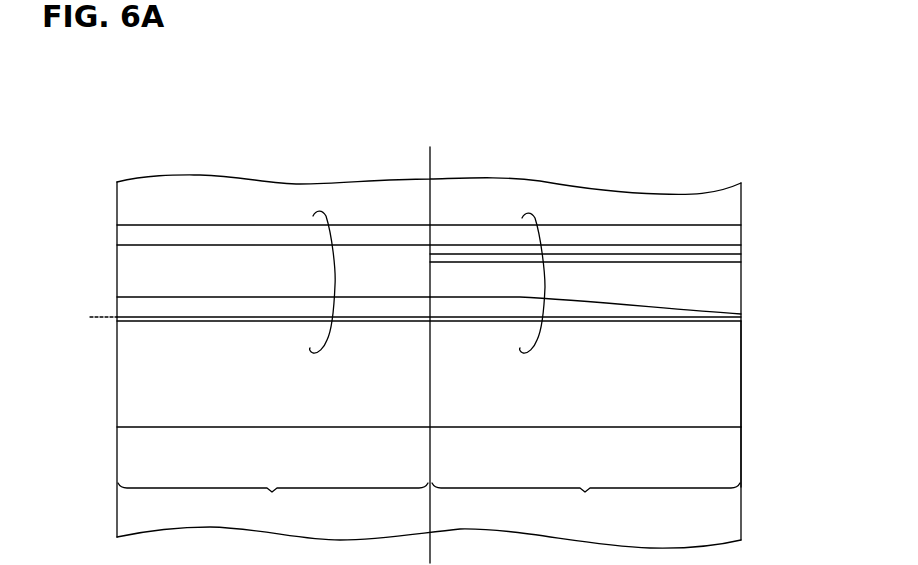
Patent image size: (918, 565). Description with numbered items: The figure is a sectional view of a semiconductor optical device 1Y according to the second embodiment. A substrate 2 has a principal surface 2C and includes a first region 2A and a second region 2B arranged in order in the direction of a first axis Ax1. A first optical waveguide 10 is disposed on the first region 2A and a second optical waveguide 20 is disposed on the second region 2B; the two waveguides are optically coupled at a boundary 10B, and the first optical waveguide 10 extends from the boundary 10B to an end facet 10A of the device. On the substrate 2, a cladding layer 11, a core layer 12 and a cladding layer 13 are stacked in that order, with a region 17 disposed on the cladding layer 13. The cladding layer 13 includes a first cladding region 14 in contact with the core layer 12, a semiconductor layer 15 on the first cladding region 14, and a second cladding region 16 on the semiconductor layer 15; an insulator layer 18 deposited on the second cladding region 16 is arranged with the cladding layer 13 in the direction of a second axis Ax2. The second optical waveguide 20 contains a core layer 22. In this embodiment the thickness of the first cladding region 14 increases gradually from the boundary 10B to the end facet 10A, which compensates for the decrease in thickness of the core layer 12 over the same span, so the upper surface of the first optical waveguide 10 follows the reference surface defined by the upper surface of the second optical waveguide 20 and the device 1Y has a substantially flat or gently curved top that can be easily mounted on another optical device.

The semiconductor optical device 1Y is at (166, 138).
The second axis Ax2 is at (427, 151).
The first axis Ax1 is at (111, 322).
The region 17 is at (742, 186).
The insulator layer 18 is at (742, 226).
The second cladding region 16 is at (742, 247).
The semiconductor layer 15 is at (742, 263).
The first cladding region 14 is at (742, 300).
The cladding layer 13 is at (803, 245).
The core layer 12 is at (742, 321).
The core layer 22 is at (163, 295).
The second optical waveguide 20 is at (321, 342).
The first optical waveguide 10 is at (531, 343).
The boundary 10B is at (431, 383).
The end facet 10A is at (742, 408).
The cladding layer 11 is at (742, 369).
The principal surface 2C is at (700, 428).
The second region 2B is at (273, 503).
The first region 2A is at (586, 503).
The substrate 2 is at (742, 508).